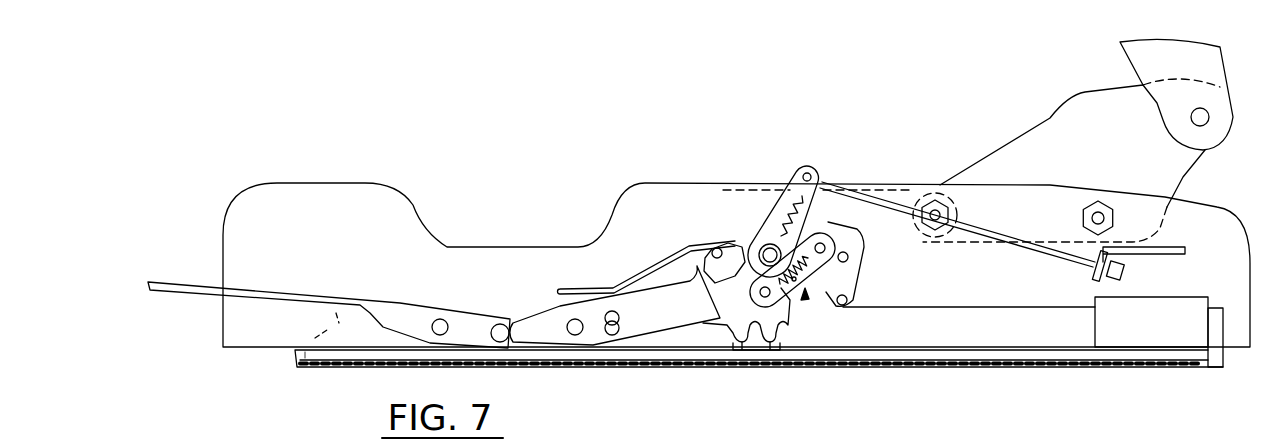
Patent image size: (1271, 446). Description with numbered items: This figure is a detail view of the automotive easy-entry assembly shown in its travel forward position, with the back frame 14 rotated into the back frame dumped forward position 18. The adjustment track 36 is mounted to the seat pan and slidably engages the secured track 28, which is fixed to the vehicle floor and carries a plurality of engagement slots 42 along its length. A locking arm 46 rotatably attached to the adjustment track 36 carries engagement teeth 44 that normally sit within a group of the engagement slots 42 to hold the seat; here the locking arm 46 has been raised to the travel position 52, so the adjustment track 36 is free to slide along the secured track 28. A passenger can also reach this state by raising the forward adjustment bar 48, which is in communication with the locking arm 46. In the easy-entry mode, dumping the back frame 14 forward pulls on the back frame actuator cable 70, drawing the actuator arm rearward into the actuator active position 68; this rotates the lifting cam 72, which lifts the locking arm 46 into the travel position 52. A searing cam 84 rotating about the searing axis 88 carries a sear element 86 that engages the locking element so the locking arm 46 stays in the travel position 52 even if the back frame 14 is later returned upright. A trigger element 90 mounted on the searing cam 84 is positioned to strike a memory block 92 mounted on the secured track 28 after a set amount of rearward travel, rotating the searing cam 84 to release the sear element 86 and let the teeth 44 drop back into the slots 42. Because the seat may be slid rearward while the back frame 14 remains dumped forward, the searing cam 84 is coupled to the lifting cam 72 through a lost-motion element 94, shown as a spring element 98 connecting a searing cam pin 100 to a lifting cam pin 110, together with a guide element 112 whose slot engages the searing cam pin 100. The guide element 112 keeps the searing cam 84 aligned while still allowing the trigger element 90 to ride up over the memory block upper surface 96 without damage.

The back frame 14 is at (1137, 63).
The back frame dumped forward position 18 is at (1218, 62).
The secured track 28 is at (343, 355).
The adjustment track 36 is at (662, 188).
The engagement slots 42 is at (965, 370).
The engagement teeth 44 is at (780, 328).
The locking arm 46 is at (642, 325).
The forward adjustment bar 48 is at (183, 280).
The travel position 52 is at (653, 284).
The actuator active position 68 is at (811, 158).
The back frame actuator cable 70 is at (893, 200).
The lifting cam 72 is at (733, 287).
The searing cam 84 is at (853, 238).
The sear element 86 is at (768, 183).
The searing axis 88 is at (848, 257).
The trigger element 90 is at (847, 297).
The memory block 92 is at (1147, 340).
The lost-motion element 94 is at (807, 299).
The memory block upper surface 96 is at (1180, 297).
The spring element 98 is at (794, 281).
The searing cam pin 100 is at (835, 205).
The lifting cam pin 110 is at (717, 320).
The guide element 112 is at (814, 283).